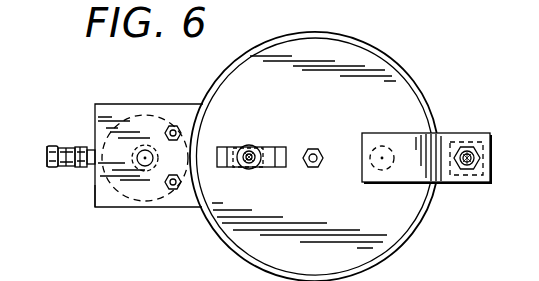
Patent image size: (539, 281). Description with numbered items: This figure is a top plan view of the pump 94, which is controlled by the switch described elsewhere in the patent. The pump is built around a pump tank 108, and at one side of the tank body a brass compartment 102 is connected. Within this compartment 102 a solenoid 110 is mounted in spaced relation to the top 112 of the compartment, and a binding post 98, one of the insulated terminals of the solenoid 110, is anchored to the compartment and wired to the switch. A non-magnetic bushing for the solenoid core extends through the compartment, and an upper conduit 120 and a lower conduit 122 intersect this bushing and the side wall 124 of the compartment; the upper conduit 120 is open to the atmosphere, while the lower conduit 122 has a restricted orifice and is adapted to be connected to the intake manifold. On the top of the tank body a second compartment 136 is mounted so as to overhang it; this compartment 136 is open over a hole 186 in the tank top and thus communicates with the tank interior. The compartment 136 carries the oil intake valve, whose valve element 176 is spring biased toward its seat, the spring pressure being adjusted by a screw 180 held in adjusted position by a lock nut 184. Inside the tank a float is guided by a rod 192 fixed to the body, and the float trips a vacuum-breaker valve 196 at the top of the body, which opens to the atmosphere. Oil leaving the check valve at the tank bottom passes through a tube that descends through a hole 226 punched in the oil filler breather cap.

The pump 94 is at (410, 70).
The pump tank 108 is at (433, 109).
The compartment 102 is at (133, 104).
The binding post 98 is at (175, 126).
The hole 226 is at (173, 190).
The top 112 is at (131, 187).
The solenoid 110 is at (163, 197).
The side wall 124 is at (93, 191).
The upper conduit 120 is at (88, 145).
The lower conduit 122 is at (62, 168).
The vacuum-breaker valve 196 is at (253, 144).
The rod 192 is at (310, 170).
The compartment 136 is at (400, 132).
The hole 186 is at (395, 156).
The valve element 176 is at (476, 142).
The screw 180 is at (463, 150).
The lock nut 184 is at (468, 172).